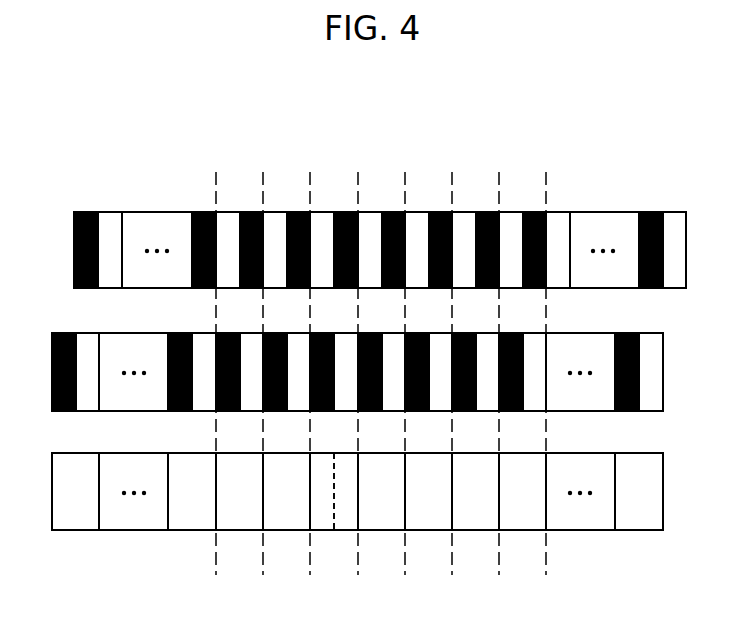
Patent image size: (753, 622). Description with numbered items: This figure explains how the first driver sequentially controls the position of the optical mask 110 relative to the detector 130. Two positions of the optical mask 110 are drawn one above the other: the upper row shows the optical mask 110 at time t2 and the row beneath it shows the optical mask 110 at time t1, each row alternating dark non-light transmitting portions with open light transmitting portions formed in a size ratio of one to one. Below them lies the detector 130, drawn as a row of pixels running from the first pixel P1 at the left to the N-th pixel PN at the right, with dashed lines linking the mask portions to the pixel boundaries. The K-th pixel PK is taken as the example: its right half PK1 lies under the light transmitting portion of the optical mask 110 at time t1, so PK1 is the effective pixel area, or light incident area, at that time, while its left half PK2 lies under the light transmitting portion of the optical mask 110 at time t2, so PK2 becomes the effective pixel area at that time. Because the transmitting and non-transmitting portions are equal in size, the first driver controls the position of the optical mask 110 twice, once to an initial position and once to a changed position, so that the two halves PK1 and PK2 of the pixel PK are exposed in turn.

The optical mask 110 is at (360, 299).
The detector 130 is at (365, 518).
The time t1 is at (340, 372).
The time t2 is at (352, 250).
The first pixel P1 is at (75, 508).
The N-th pixel PN is at (639, 508).
The K-th pixel PK is at (334, 507).
The effective pixel area at time t1 PK1 is at (348, 517).
The effective pixel area at time t2 PK2 is at (318, 517).